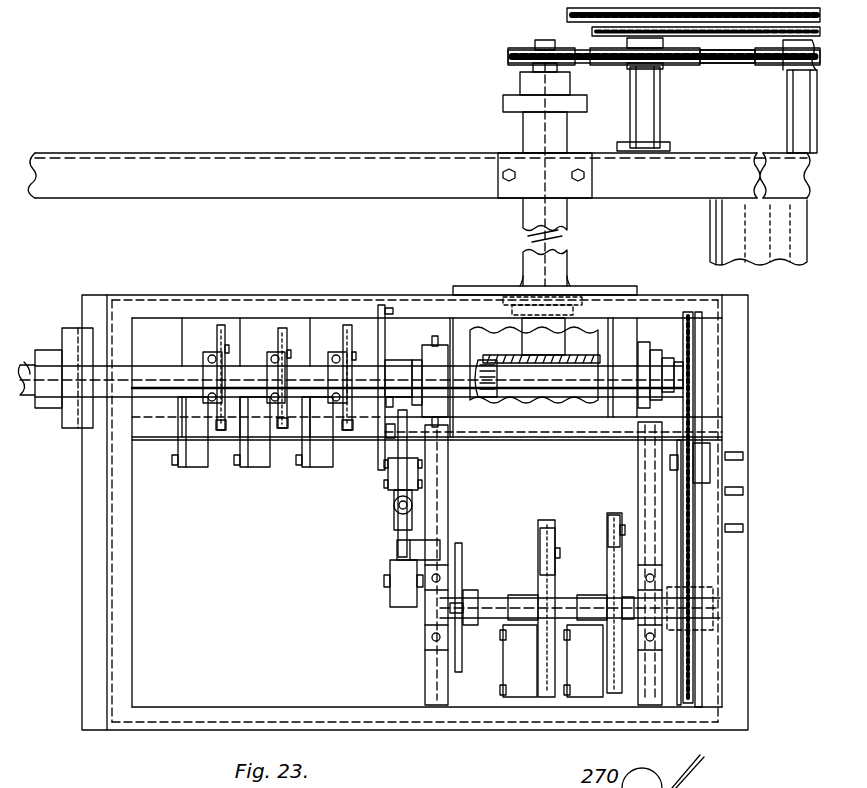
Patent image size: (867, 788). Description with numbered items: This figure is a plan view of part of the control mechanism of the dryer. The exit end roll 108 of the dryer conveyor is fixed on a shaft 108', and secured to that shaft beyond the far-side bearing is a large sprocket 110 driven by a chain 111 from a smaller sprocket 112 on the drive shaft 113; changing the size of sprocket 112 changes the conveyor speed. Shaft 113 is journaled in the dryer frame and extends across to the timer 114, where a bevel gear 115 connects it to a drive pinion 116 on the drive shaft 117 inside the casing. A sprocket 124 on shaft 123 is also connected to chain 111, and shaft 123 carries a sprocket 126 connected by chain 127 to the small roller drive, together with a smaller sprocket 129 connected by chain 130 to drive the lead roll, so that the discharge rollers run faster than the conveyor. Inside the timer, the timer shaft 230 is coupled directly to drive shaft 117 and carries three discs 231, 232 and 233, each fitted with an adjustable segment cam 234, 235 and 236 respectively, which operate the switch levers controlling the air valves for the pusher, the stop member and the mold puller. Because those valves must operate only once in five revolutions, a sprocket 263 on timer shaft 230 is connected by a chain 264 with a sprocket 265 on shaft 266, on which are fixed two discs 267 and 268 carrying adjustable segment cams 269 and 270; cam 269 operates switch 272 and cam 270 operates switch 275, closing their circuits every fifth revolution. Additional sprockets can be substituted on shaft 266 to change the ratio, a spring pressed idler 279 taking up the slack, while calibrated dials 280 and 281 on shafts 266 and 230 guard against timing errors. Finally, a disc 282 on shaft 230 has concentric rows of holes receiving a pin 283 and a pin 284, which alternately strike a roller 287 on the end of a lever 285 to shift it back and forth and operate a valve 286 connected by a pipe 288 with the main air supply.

The exit end roll 108 is at (731, 232).
The shaft 108' is at (770, 96).
The large sprocket 110 is at (775, 66).
The chain 111 is at (722, 66).
The smaller sprocket 112 is at (510, 66).
The drive shaft 113 is at (535, 44).
The timer 114 is at (430, 292).
The bevel gear 115 is at (598, 356).
The drive pinion 116 is at (497, 397).
The drive shaft 117 is at (25, 365).
The shaft 123 is at (648, 82).
The sprocket 124 is at (614, 66).
The sprocket 126 is at (592, 27).
The chain 127 is at (567, 13).
The smaller sprocket 129 is at (600, 36).
The chain 130 is at (748, 32).
The timer shaft 230 is at (150, 366).
The disc 231 is at (210, 455).
The disc 232 is at (272, 455).
The disc 233 is at (336, 455).
The segment cam 234 is at (221, 325).
The segment cam 235 is at (283, 328).
The segment cam 236 is at (348, 325).
The sprocket 263 is at (695, 322).
The chain 264 is at (702, 400).
The sprocket 265 is at (690, 700).
The shaft 266 is at (565, 600).
The disc 267 is at (538, 598).
The disc 268 is at (622, 560).
The segment cam 269 is at (552, 525).
The segment cam 270 is at (617, 515).
The switch 272 is at (515, 663).
The switch 275 is at (588, 675).
The spring pressed idler 279 is at (710, 468).
The calibrated dial 280 is at (462, 558).
The calibrated dial 281 is at (645, 342).
The disc 282 is at (414, 377).
The pin 283 is at (381, 305).
The pin 284 is at (397, 383).
The lever 285 is at (400, 447).
The valve 286 is at (394, 528).
The roller 287 is at (388, 438).
The pipe 288 is at (397, 553).